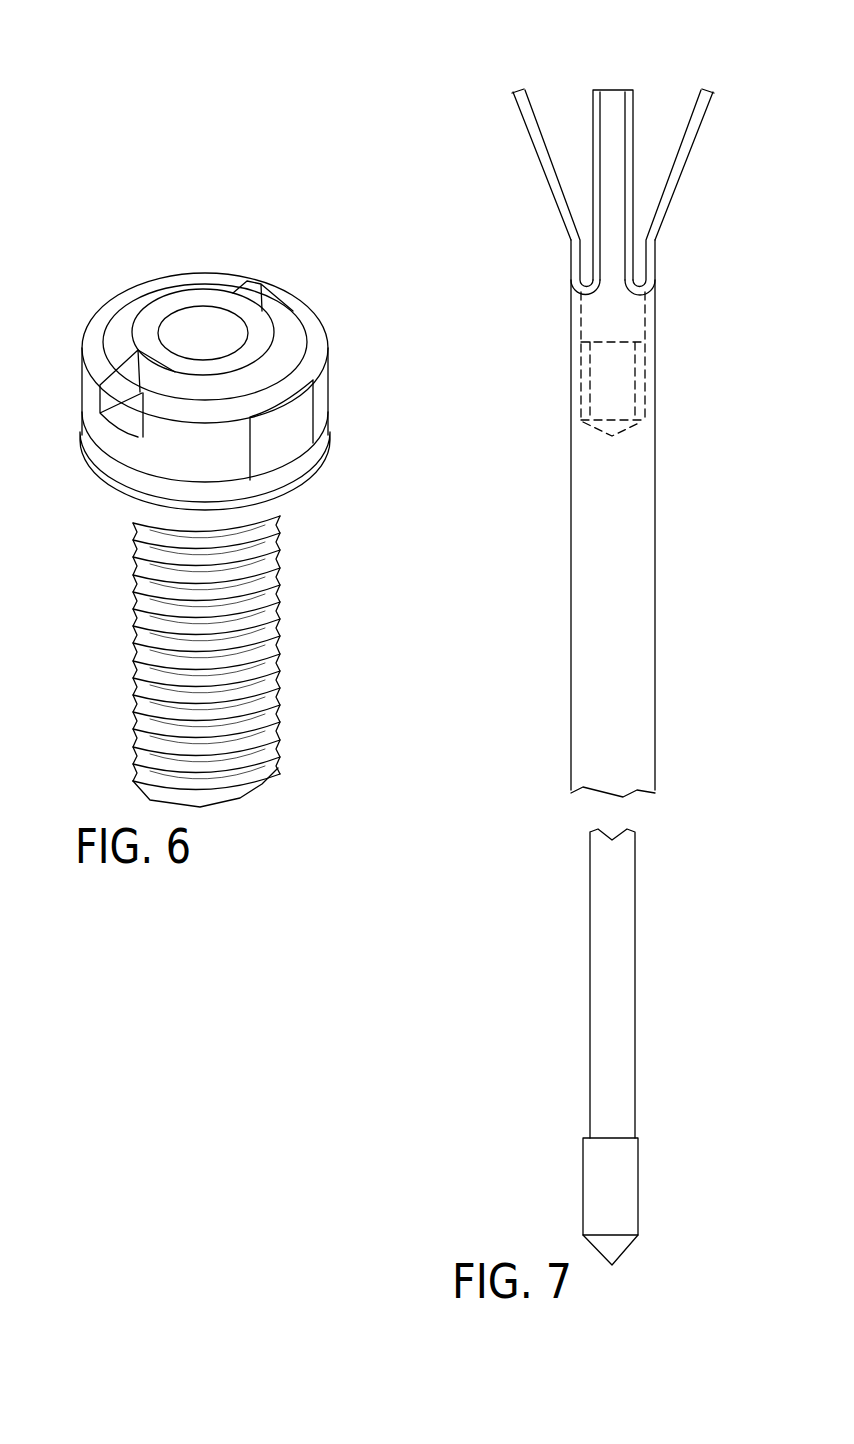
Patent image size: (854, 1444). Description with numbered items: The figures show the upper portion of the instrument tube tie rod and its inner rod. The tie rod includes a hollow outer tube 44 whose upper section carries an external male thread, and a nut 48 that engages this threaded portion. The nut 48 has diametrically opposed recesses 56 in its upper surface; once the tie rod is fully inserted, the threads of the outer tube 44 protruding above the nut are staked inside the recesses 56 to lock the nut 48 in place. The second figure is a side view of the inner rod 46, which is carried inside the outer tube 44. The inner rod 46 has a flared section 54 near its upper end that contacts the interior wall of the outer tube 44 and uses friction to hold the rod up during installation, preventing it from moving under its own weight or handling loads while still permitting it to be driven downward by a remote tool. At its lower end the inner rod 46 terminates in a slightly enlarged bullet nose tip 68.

In FIG. 6, the hollow outer tube 44 is at (280, 623).
In FIG. 7, the inner rod 46 is at (628, 967).
In FIG. 6, the nut 48 is at (328, 415).
In FIG. 7, the flared section 54 is at (600, 127).
In FIG. 6, the recesses 56 is at (292, 314).
In FIG. 7, the bullet nose tip 68 is at (635, 1197).